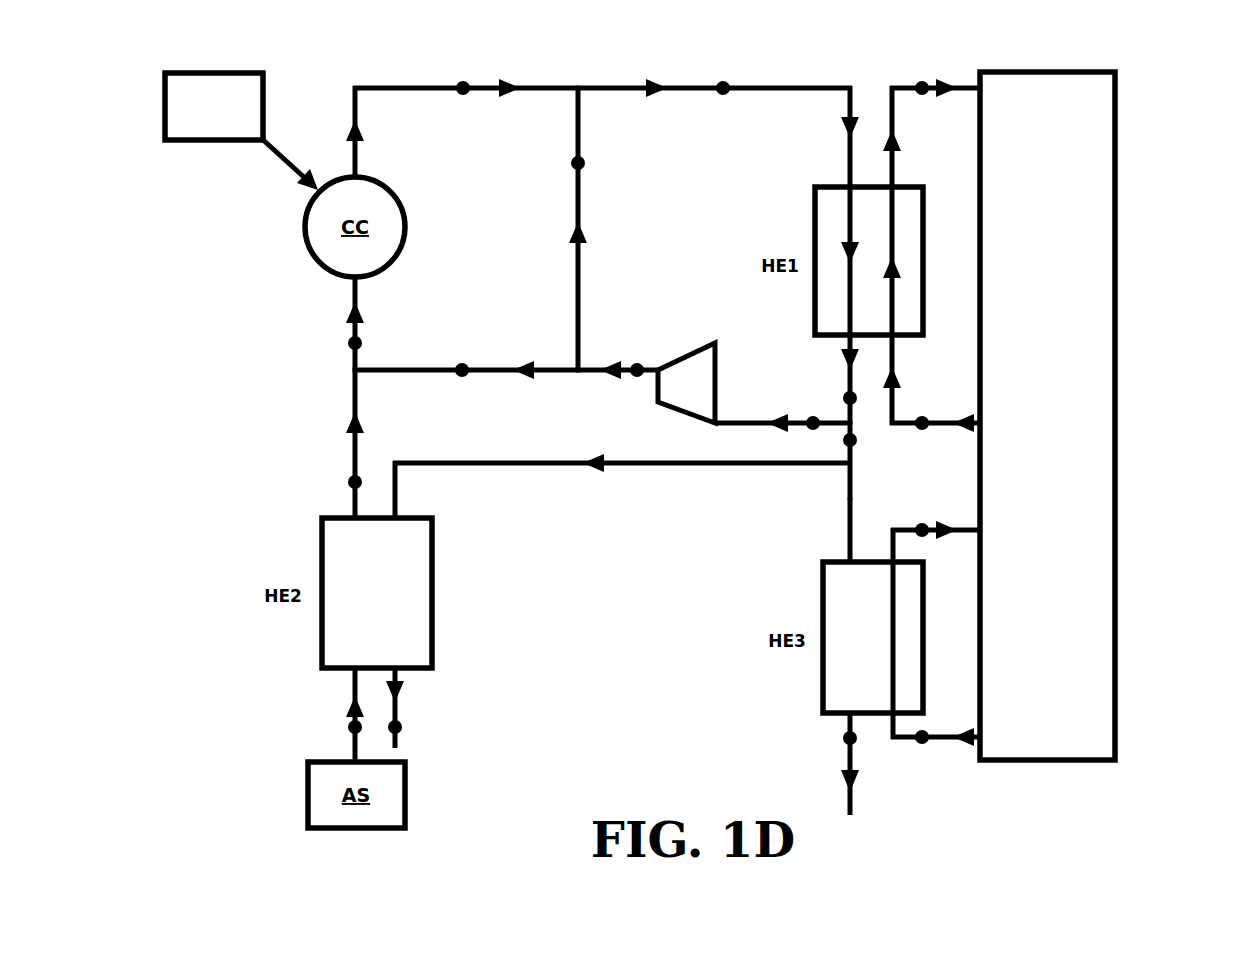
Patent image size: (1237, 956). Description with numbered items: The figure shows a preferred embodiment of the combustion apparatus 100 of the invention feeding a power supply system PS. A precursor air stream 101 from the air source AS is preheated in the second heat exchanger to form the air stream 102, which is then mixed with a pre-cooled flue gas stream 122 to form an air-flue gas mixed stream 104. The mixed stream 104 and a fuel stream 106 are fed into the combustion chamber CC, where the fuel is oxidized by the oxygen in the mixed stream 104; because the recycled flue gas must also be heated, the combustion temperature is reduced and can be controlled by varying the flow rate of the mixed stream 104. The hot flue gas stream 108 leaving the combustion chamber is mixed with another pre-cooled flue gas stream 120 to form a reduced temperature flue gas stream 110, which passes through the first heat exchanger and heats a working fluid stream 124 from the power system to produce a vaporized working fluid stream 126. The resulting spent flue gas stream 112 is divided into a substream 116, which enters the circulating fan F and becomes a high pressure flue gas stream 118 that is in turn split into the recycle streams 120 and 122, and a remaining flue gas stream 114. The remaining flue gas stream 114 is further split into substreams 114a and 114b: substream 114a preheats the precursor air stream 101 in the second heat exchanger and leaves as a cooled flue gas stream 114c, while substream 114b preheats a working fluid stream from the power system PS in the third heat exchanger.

The combustion apparatus 100 is at (1168, 343).
The precursor air stream 101 is at (352, 685).
The air stream 102 is at (352, 450).
The air-flue gas mixed stream 104 is at (352, 366).
The fuel stream 106 is at (287, 153).
The flue gas stream 108 is at (407, 83).
The reduced temperature flue gas stream 110 is at (624, 83).
The spent flue gas stream 112 is at (840, 383).
The remaining flue gas stream 114 is at (843, 433).
The flue gas substream 114a is at (690, 468).
The flue gas substream 114b is at (845, 515).
The cooled flue gas stream 114c is at (397, 678).
The flue gas substream 116 is at (756, 418).
The high pressure flue gas stream 118 is at (578, 372).
The pre-cooled flue gas stream 120 is at (582, 318).
The pre-cooled flue gas stream 122 is at (415, 366).
The working fluid stream 124 is at (895, 428).
The vaporized working fluid stream 126 is at (898, 83).